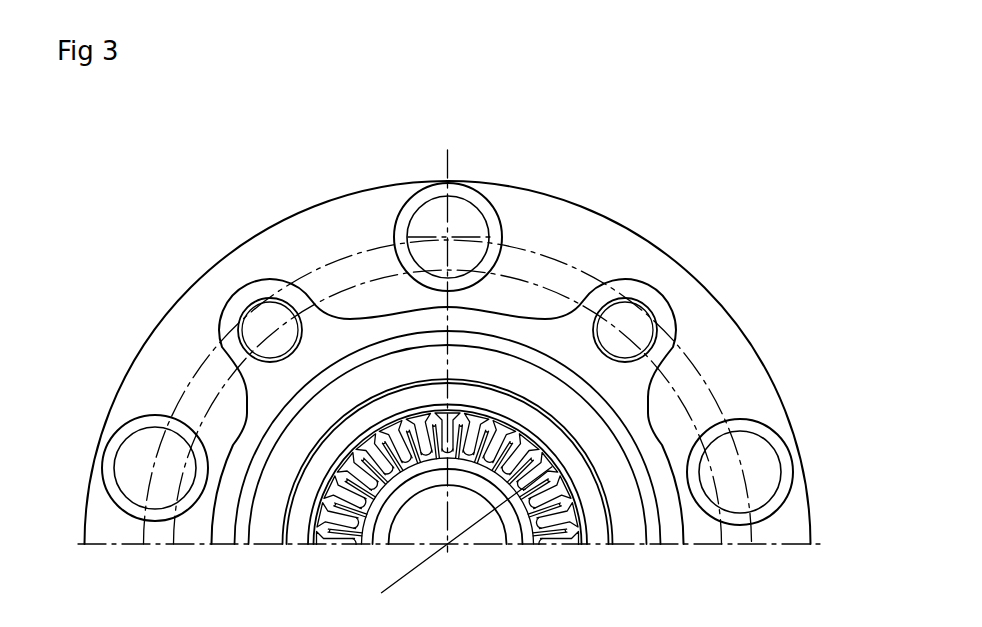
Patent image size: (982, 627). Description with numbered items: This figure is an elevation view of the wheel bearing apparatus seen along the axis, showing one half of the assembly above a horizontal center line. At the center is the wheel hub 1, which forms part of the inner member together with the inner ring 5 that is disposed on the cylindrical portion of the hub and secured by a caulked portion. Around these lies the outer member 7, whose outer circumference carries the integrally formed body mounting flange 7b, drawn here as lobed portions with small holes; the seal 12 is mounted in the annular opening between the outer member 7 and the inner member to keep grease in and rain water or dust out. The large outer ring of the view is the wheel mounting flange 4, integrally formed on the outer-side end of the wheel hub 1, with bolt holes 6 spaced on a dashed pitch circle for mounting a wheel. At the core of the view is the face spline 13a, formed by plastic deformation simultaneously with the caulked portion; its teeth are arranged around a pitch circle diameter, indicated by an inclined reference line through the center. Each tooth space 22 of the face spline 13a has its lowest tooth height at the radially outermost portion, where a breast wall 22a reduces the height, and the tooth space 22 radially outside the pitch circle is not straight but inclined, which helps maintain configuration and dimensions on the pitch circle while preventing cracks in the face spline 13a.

The wheel hub 1 is at (166, 347).
The wheel mounting flange 4 is at (353, 212).
The inner ring 5 is at (352, 430).
The bolt hole 6 is at (437, 207).
The outer member 7 is at (517, 327).
The body mounting flange 7b is at (648, 293).
The seal 12 is at (630, 507).
The face spline 13a is at (344, 556).
The tooth space 22 is at (440, 455).
The breast wall 22a is at (462, 405).